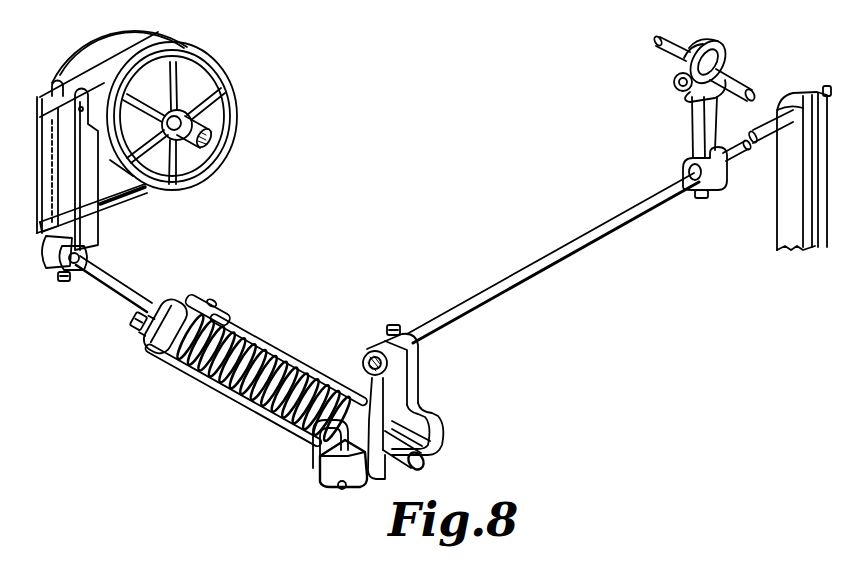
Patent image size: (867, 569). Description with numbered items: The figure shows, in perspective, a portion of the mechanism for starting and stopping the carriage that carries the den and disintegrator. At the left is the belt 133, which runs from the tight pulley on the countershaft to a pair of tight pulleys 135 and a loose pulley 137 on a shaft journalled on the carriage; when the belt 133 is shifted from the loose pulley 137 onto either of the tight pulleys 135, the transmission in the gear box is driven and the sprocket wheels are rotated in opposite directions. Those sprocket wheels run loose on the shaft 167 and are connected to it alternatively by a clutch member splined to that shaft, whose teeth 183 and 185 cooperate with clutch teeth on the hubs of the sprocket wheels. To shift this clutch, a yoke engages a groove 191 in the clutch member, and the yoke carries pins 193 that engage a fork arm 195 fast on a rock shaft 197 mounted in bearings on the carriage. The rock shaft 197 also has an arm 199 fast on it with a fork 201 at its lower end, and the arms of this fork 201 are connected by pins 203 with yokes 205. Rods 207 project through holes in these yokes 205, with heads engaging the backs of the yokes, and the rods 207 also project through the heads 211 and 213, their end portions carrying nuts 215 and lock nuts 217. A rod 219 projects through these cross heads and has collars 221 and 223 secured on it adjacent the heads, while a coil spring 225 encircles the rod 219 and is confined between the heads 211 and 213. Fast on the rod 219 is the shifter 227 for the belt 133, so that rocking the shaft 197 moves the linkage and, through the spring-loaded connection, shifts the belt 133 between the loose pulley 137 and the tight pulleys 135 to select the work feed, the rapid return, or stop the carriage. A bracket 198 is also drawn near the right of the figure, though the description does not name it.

The belt 133 is at (128, 197).
The tight pulleys 135 is at (134, 29).
The loose pulley 137 is at (200, 74).
The shaft 167 is at (736, 80).
The clutch teeth 183 is at (724, 54).
The clutch teeth 185 is at (693, 45).
The groove 191 is at (712, 45).
The pins 193 is at (677, 82).
The fork arm 195 is at (698, 130).
The rock shaft 197 is at (582, 236).
The bracket 198 is at (780, 193).
The arm 199 is at (408, 381).
The fork 201 is at (436, 427).
The pins 203 is at (345, 493).
The yokes 205 is at (333, 479).
The rods 207 is at (288, 363).
The head 211 is at (312, 455).
The head 213 is at (210, 306).
The nuts 215 is at (138, 350).
The lock nuts 217 is at (132, 341).
The rod 219 is at (112, 275).
The collar 221 is at (185, 294).
The collar 223 is at (434, 452).
The coil spring 225 is at (268, 402).
The shifter 227 is at (96, 203).